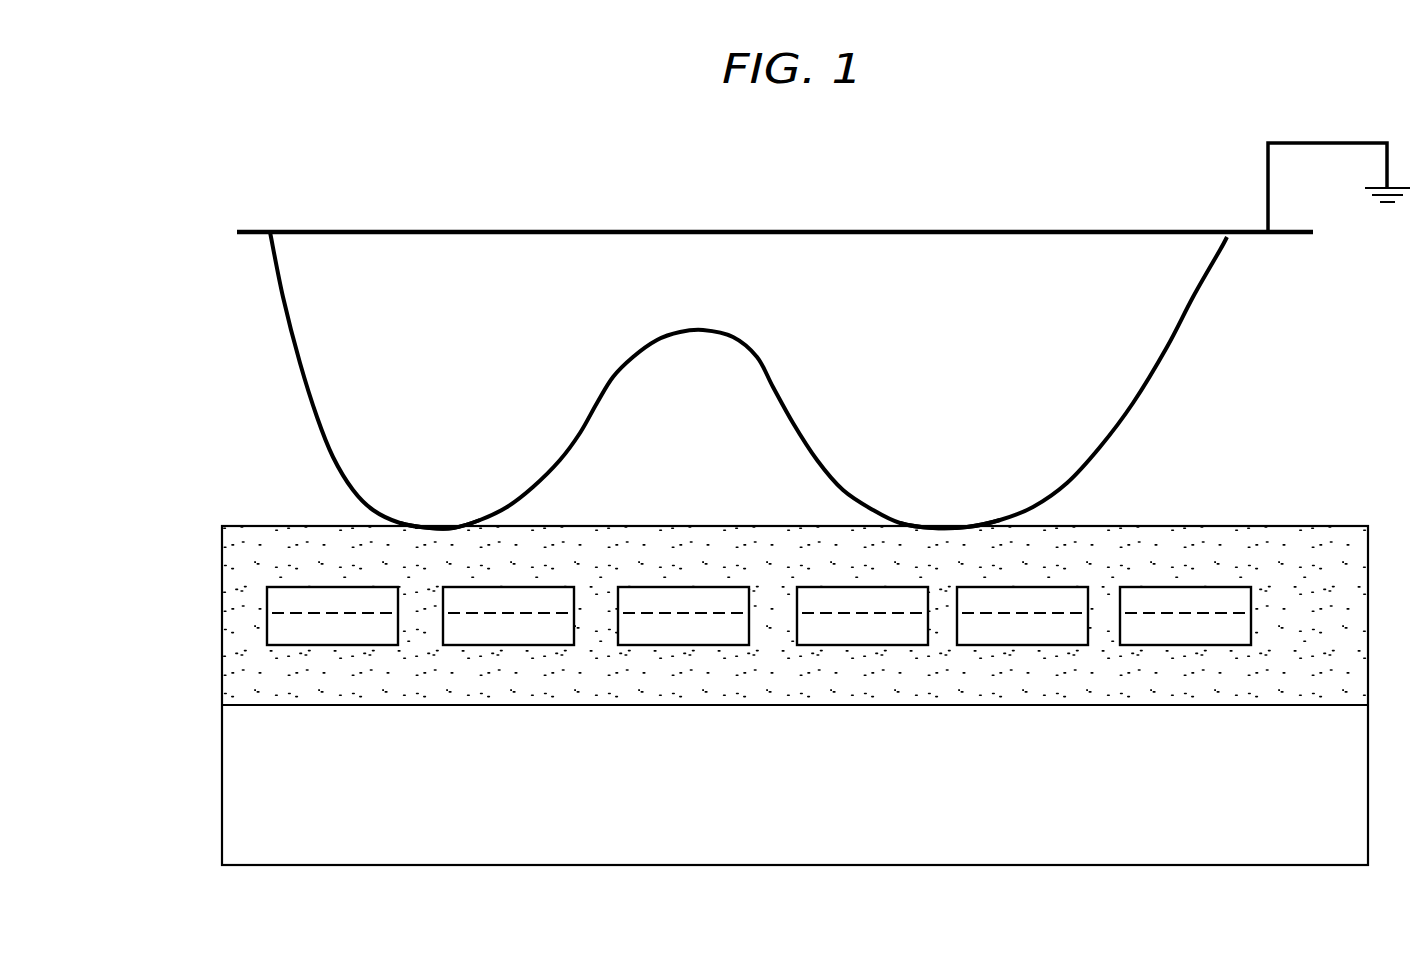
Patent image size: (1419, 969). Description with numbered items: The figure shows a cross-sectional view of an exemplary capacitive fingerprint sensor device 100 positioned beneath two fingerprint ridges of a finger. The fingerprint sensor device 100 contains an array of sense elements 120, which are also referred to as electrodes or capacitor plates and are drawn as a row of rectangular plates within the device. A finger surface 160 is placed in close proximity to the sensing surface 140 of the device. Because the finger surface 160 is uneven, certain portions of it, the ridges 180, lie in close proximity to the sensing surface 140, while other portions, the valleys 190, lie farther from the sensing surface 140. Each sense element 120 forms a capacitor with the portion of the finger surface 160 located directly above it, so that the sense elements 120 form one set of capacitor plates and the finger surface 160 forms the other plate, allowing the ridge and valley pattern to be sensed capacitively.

The fingerprint sensor device 100 is at (757, 165).
The sense elements 120 is at (1175, 630).
The sensing surface 140 is at (222, 603).
The finger surface 160 is at (413, 232).
The ridges 180 is at (422, 532).
The valleys 190 is at (689, 333).